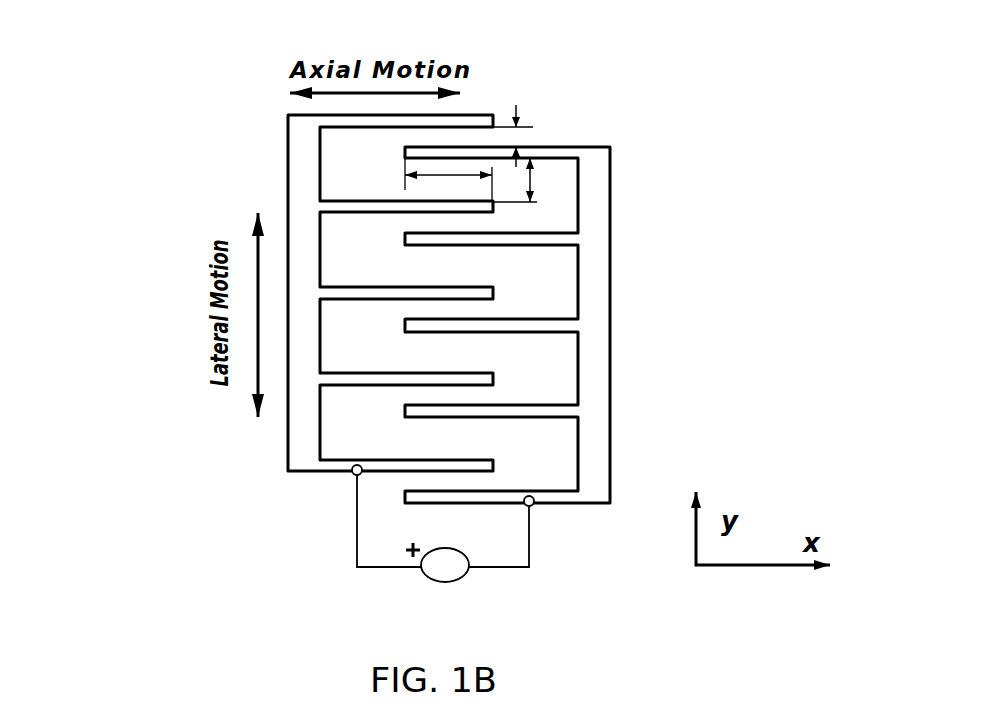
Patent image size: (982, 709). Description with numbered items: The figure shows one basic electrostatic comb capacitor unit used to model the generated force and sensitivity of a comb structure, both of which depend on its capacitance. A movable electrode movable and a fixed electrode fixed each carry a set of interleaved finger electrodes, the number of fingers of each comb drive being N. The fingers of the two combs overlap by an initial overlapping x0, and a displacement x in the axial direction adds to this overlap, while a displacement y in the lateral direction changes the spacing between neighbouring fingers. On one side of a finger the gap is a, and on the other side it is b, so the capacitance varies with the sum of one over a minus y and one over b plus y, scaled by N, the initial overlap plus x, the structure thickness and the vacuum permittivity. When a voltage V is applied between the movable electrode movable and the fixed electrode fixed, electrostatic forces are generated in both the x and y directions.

The movable electrode movable is at (313, 438).
The fixed electrode fixed is at (593, 350).
The finger gap a is at (518, 136).
The finger gap b is at (525, 180).
The initial overlapping x0 is at (448, 180).
The number of finger electrodes N is at (438, 353).
The voltage V is at (443, 523).